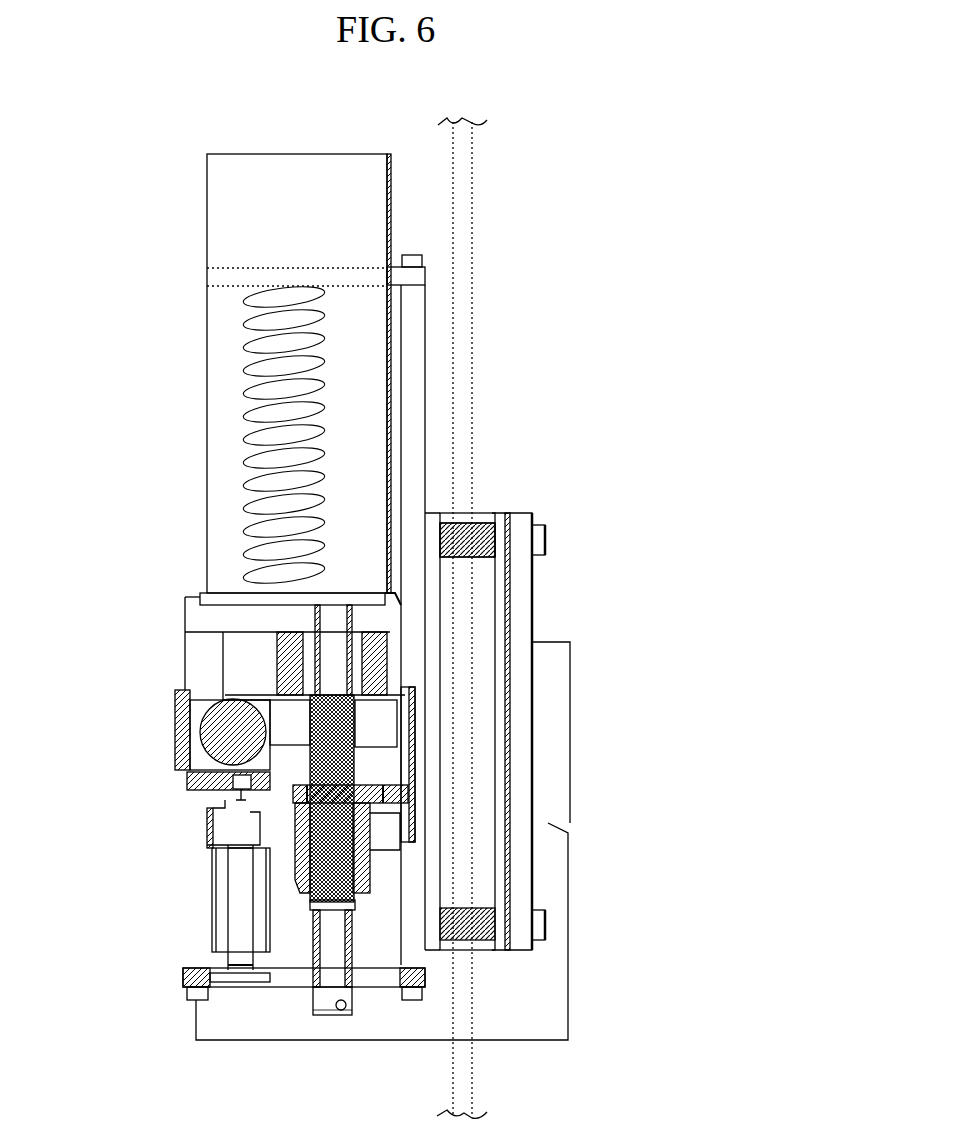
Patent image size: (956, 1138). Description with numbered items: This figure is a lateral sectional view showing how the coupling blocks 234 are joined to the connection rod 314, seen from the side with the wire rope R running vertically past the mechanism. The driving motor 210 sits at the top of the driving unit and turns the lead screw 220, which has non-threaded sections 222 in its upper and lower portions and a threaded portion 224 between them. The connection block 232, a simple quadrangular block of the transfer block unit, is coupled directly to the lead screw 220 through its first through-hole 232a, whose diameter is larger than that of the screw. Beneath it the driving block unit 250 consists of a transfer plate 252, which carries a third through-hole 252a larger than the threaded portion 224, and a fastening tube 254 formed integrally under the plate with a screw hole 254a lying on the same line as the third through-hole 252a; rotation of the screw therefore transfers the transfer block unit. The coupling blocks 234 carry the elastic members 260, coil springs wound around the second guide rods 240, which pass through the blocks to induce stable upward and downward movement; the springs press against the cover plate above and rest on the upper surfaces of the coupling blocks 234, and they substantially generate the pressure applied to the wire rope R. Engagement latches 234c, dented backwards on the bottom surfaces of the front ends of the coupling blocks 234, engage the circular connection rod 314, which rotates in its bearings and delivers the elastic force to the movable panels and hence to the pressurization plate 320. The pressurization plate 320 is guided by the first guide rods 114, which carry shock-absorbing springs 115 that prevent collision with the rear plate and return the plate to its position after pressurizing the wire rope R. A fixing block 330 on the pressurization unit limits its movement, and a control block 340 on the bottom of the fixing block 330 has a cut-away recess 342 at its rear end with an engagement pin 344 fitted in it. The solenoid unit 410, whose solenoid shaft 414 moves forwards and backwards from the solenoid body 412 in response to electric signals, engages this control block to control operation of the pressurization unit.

The driving motor 210 is at (262, 237).
The elastic members 260 is at (250, 342).
The second guide rods 240 is at (255, 420).
The connection block 232 is at (200, 597).
The first through-hole 232a is at (292, 642).
The non-threaded sections 222 is at (337, 645).
The threaded portion 224 is at (330, 722).
The lead screw 220 is at (655, 592).
The coupling blocks 234 is at (225, 632).
The engagement latches 234c is at (223, 700).
The fixing block 330 is at (172, 700).
The connection rod 314 is at (173, 760).
The control block 340 is at (210, 793).
The cut-away recess 342 is at (205, 798).
The engagement pin 344 is at (210, 855).
The solenoid unit 410 is at (106, 914).
The solenoid body 412 is at (237, 870).
The solenoid shaft 414 is at (237, 915).
The transfer plate 252 is at (365, 830).
The third through-hole 252a is at (302, 800).
The fastening tube 254 is at (330, 876).
The screw hole 254a is at (330, 906).
The driving block unit 250 is at (668, 770).
The first guide rods 114 is at (465, 520).
The shock-absorbing springs 115 is at (467, 540).
The pressurization plate 320 is at (520, 585).
The wire rope R is at (470, 308).